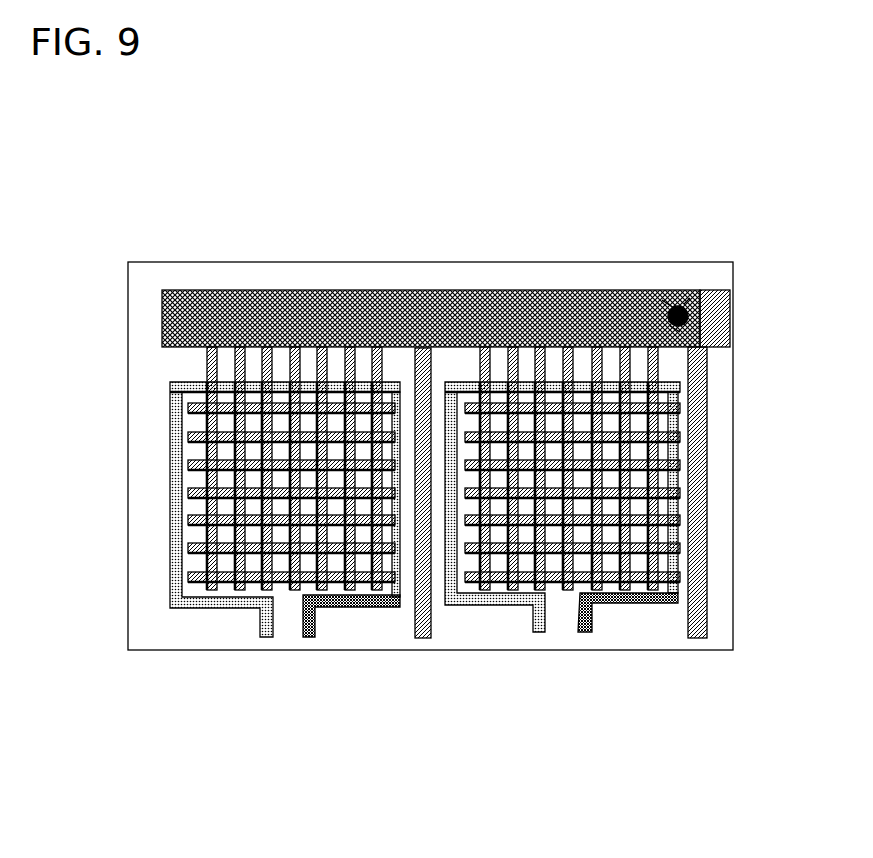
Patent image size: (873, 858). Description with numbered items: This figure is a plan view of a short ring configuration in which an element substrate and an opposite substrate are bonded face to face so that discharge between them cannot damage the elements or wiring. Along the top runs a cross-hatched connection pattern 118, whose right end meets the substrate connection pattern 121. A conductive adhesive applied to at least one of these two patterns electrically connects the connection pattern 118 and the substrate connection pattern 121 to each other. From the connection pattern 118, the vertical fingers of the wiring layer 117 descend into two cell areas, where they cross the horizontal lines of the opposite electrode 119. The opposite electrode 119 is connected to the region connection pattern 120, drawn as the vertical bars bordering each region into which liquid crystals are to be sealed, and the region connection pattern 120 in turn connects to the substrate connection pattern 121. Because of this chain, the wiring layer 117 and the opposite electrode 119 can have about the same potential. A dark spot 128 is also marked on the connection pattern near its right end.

The wiring layer 117 is at (207, 362).
The connection pattern 118 is at (297, 290).
The opposite electrode 119 is at (188, 518).
The region connection pattern 120 is at (416, 640).
The substrate connection pattern 121 is at (699, 290).
The defect / short portion 128 is at (652, 306).